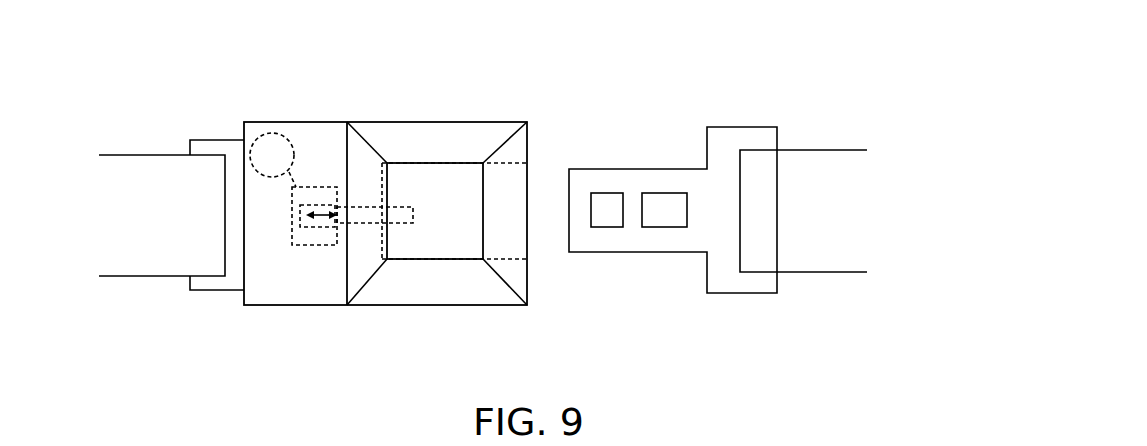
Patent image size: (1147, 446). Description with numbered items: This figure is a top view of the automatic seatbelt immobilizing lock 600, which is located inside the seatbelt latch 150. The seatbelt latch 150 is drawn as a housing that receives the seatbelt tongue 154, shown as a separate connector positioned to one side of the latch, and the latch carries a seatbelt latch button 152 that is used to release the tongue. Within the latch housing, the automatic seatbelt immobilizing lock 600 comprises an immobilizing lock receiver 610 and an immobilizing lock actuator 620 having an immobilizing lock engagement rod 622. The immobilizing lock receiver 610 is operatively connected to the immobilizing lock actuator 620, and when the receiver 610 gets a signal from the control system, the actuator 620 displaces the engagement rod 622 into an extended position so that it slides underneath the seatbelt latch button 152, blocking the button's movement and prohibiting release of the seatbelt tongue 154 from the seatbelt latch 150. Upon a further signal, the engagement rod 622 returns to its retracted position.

The automatic seatbelt immobilizing lock 600 is at (553, 73).
The seatbelt latch 150 is at (408, 289).
The seatbelt latch button 152 is at (453, 238).
The seatbelt tongue 154 is at (723, 253).
The immobilizing lock receiver 610 is at (273, 150).
The immobilizing lock actuator 620 is at (315, 222).
The immobilizing lock engagement rod 622 is at (372, 212).